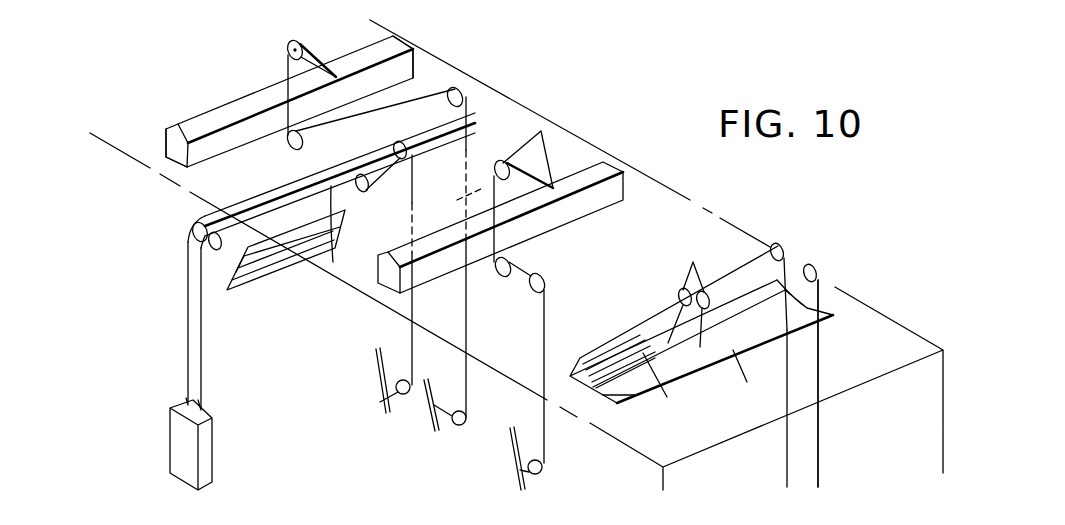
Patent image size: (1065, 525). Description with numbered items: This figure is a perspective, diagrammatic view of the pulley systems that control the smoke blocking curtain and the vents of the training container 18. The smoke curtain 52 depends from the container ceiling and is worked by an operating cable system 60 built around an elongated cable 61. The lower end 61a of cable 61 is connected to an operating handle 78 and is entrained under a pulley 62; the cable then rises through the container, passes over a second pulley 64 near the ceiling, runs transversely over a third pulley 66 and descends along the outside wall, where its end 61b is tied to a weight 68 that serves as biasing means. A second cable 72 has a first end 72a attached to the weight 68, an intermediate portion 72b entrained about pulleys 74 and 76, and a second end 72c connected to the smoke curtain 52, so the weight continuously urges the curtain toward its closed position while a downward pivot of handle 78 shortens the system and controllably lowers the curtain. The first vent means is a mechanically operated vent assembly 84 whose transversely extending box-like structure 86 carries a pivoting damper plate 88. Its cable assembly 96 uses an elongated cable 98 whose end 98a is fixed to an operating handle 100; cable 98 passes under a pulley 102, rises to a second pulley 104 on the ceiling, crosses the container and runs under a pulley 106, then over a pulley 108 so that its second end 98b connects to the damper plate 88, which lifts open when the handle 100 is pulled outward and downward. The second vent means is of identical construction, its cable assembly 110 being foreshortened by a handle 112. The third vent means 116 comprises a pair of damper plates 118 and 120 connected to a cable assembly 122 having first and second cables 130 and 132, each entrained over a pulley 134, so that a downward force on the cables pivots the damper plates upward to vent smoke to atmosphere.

The training container 18 is at (670, 192).
The smoke blocking curtain 52 is at (265, 270).
The operating cable system 60 is at (269, 194).
The elongated cable 61 is at (187, 332).
The lower end of cable 61 61a is at (378, 402).
The end of cable 61 61b is at (186, 400).
The pulley 62 is at (402, 380).
The second pulley 64 is at (407, 146).
The third pulley 66 is at (192, 228).
The weight 68 is at (213, 450).
The second cable 72 is at (202, 368).
The first end of second cable 72a is at (204, 406).
The intermediate portion of second cable 72b is at (372, 297).
The second end of second cable 72c is at (373, 191).
The pulley 74 is at (208, 243).
The pulley 76 is at (366, 173).
The operating handle 78 is at (372, 366).
The vent assembly 84 is at (178, 111).
The box-like structure 86 is at (230, 101).
The damper plate 88 is at (414, 42).
The cable assembly 96 is at (424, 95).
The elongated cable 98 is at (469, 339).
The end of cable 98 98a is at (447, 425).
The second end of cable 98 98b is at (337, 70).
The operating handle 100 is at (423, 397).
The pulley 102 is at (466, 415).
The second pulley 104 is at (463, 91).
The pulley 106 is at (289, 148).
The pulley 108 is at (287, 50).
The cable assembly 110 is at (546, 333).
The handle 112 is at (510, 433).
The third vent means 116 is at (660, 322).
The damper plate 118 is at (663, 362).
The damper plate 120 is at (742, 357).
The cable assembly 122 is at (822, 369).
The first cable 130 is at (820, 454).
The second cable 132 is at (785, 474).
The pulley 134 is at (693, 264).